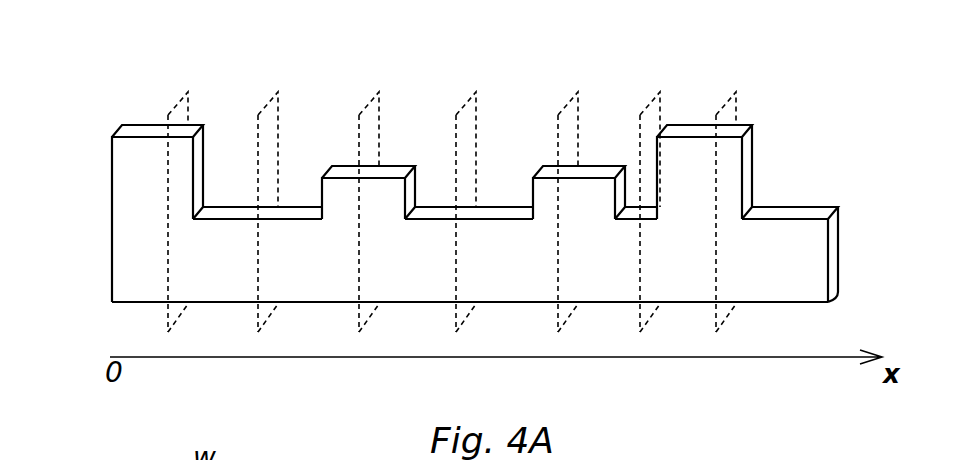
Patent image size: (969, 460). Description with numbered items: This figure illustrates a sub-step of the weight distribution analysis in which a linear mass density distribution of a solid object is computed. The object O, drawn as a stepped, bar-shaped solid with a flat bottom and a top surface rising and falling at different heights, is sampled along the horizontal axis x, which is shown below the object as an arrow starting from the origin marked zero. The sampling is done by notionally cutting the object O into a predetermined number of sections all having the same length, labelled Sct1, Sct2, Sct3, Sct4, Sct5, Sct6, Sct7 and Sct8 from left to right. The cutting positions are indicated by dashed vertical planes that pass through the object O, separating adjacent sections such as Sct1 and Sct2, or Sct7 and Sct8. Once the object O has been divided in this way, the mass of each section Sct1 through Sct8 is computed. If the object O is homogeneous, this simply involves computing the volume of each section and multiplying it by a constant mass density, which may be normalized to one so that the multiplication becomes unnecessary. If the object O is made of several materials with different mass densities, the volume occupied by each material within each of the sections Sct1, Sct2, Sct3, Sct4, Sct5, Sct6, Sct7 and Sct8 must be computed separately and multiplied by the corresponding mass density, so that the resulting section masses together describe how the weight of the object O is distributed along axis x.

The section Sct1 is at (135, 168).
The section Sct2 is at (205, 128).
The section Sct3 is at (305, 197).
The section Sct4 is at (398, 165).
The section Sct5 is at (500, 213).
The section Sct6 is at (607, 175).
The section Sct7 is at (688, 132).
The section Sct8 is at (792, 215).
The object O is at (112, 228).